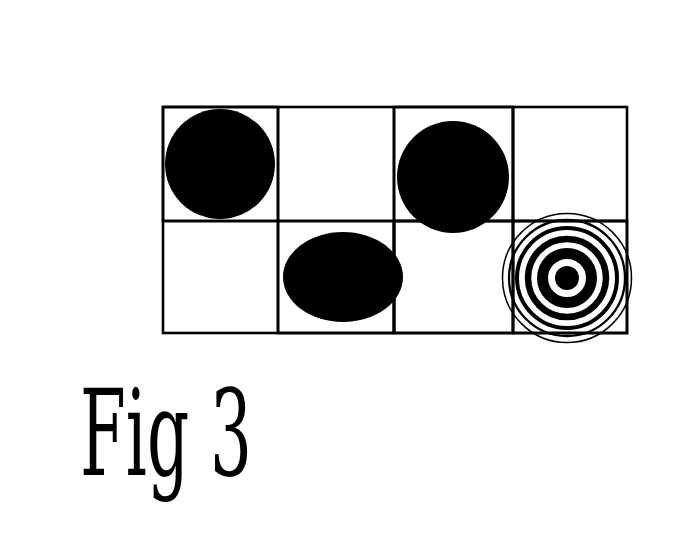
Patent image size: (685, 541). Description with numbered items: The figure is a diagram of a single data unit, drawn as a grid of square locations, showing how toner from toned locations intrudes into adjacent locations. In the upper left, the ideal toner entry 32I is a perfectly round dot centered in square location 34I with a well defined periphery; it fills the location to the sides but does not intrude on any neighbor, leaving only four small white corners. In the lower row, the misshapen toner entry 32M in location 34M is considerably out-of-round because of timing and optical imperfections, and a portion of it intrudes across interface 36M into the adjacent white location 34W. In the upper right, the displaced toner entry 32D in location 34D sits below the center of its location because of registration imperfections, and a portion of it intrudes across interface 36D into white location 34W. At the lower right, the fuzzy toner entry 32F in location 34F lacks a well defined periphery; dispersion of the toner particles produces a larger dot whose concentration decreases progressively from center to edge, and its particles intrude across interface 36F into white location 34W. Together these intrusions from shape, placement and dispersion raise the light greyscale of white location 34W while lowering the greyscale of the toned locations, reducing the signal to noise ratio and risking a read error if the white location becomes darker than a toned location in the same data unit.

The ideal toner entry 32I is at (172, 125).
The square location 34I is at (267, 117).
The displaced toner entry 32D is at (412, 128).
The location 34D is at (487, 118).
The misshapen toner entry 32M is at (293, 318).
The location 34M is at (374, 320).
The white location 34W is at (457, 303).
The fuzzy toner entry 32F is at (555, 350).
The location 34F is at (617, 333).
The interface 36M is at (390, 228).
The interface 36D is at (515, 218).
The interface 36F is at (525, 218).